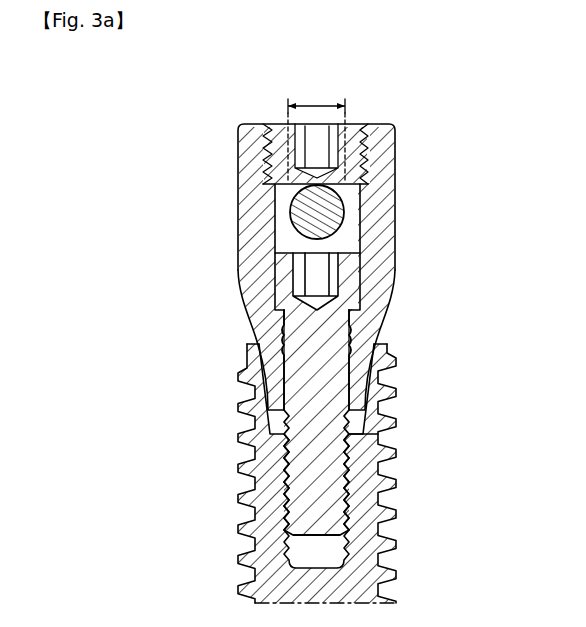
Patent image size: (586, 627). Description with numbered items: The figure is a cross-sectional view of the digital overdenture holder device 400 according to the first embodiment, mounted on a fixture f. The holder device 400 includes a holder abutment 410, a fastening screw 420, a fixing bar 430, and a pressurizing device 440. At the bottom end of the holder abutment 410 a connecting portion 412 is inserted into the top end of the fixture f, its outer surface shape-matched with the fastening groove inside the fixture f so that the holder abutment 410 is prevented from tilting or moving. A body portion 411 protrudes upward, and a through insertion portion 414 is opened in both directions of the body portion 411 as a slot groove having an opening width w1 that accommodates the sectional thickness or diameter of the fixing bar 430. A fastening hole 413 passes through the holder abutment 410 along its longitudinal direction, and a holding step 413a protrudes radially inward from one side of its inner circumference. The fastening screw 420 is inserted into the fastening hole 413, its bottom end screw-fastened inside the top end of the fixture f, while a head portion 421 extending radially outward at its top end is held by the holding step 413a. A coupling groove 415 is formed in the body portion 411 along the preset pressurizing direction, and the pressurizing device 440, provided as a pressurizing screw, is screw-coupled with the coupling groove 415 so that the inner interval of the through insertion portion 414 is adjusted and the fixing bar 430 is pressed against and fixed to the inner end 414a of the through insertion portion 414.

The holder device 400 is at (150, 134).
The holder abutment 410 is at (400, 246).
The body portion 411 is at (380, 196).
The connecting portion 412 is at (387, 350).
The fastening hole 413 is at (397, 400).
The holding step 413a is at (377, 340).
The through insertion portion 414 is at (291, 189).
The inner end of the through insertion portion 414a is at (317, 240).
The coupling groove 415 is at (370, 164).
The fastening screw 420 is at (355, 434).
The head portion 421 is at (357, 295).
The fixing bar 430 is at (284, 209).
The pressurizing device 440 is at (370, 145).
The fixture f is at (395, 511).
The opening width w1 is at (318, 110).